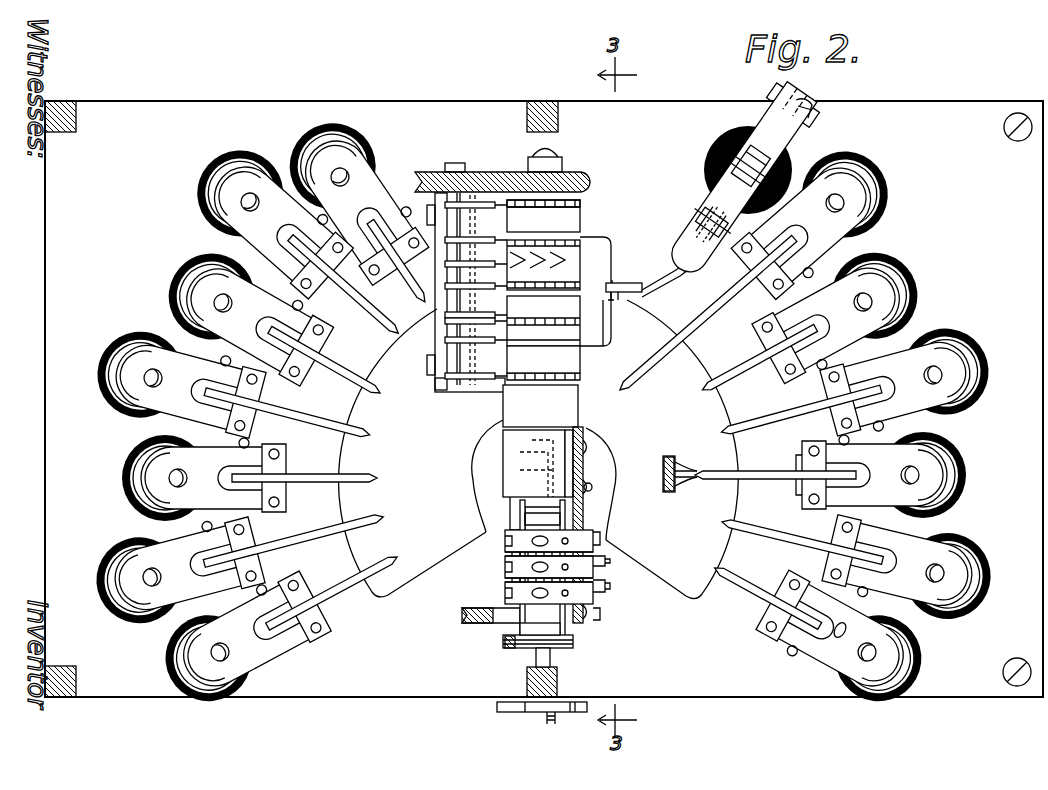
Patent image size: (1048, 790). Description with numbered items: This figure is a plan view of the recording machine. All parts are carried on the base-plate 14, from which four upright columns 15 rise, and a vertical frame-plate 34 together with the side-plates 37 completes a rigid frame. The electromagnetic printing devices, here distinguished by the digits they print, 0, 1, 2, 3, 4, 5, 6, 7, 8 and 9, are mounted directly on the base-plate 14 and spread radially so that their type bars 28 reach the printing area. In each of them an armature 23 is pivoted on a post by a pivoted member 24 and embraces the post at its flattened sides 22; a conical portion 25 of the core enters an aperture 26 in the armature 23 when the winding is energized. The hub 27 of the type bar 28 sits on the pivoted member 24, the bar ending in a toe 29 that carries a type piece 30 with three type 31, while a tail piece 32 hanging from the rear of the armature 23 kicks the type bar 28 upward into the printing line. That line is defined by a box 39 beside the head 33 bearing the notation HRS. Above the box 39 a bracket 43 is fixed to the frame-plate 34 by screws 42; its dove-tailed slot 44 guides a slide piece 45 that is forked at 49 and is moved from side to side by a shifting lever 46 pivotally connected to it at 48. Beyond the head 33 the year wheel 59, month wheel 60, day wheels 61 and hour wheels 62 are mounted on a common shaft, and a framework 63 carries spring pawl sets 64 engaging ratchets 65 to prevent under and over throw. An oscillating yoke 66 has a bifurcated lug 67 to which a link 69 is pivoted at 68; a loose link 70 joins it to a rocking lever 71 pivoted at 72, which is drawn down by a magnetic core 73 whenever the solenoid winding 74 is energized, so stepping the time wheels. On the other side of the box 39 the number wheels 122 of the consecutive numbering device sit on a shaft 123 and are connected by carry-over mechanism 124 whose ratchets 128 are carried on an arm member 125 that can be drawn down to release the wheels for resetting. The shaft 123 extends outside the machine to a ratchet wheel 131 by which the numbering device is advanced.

The base-plate 14 is at (192, 110).
The upright columns 15 is at (77, 108).
The side-plate 37 is at (485, 178).
The framework 63 is at (437, 335).
The spring pawl sets 64 is at (492, 360).
The year wheel 59 is at (582, 218).
The ratchets 65 is at (582, 205).
The hour wheels 62 is at (585, 280).
The day wheels 61 is at (600, 345).
The oscillating yoke 66 is at (603, 338).
The bifurcated lug 67 is at (614, 300).
The pivot 68 is at (620, 284).
The link 69 is at (664, 282).
The loose link 70 is at (700, 238).
The rocking lever 71 is at (716, 203).
The pivot 72 is at (806, 133).
The magnetic core 73 is at (706, 152).
The solenoid winding 74 is at (726, 150).
The month wheel 60 is at (503, 425).
The head 33 is at (578, 410).
The vertical frame-plate 34 is at (585, 458).
The screws 42 is at (592, 486).
The bracket 43 is at (515, 448).
The dove-tailed slot 44 is at (520, 475).
The box 39 is at (512, 508).
The slide piece 45 is at (550, 508).
The number wheels 122 is at (505, 590).
The arm member 125 is at (600, 536).
The ratchets 128 is at (610, 565).
The carry-over mechanism 124 is at (603, 590).
The fork 49 is at (560, 640).
The shifting lever 46 is at (575, 648).
The pivotal connection 48 is at (505, 645).
The shaft 123 is at (550, 660).
The ratchet wheel 131 is at (520, 712).
The key lever 2 is at (843, 473).
The armature 23 is at (879, 475).
The central conical portion 25 is at (910, 475).
The aperture 26 is at (908, 475).
The hub 27 is at (814, 451).
The flattened sides 22 is at (814, 475).
The pivoted member 24 is at (814, 499).
The tail piece 32 is at (822, 465).
The type bar 28 is at (755, 474).
The toe 29 is at (690, 471).
The type piece 30 is at (669, 492).
The type 31 is at (663, 466).
The key lever 0 is at (815, 623).
The key lever 1 is at (855, 554).
The key lever 3 is at (854, 396).
The key lever 4 is at (807, 332).
The key lever 5 is at (277, 334).
The key lever 6 is at (234, 399).
The key lever 7 is at (249, 478).
The key lever 8 is at (240, 554).
The key lever 9 is at (283, 617).